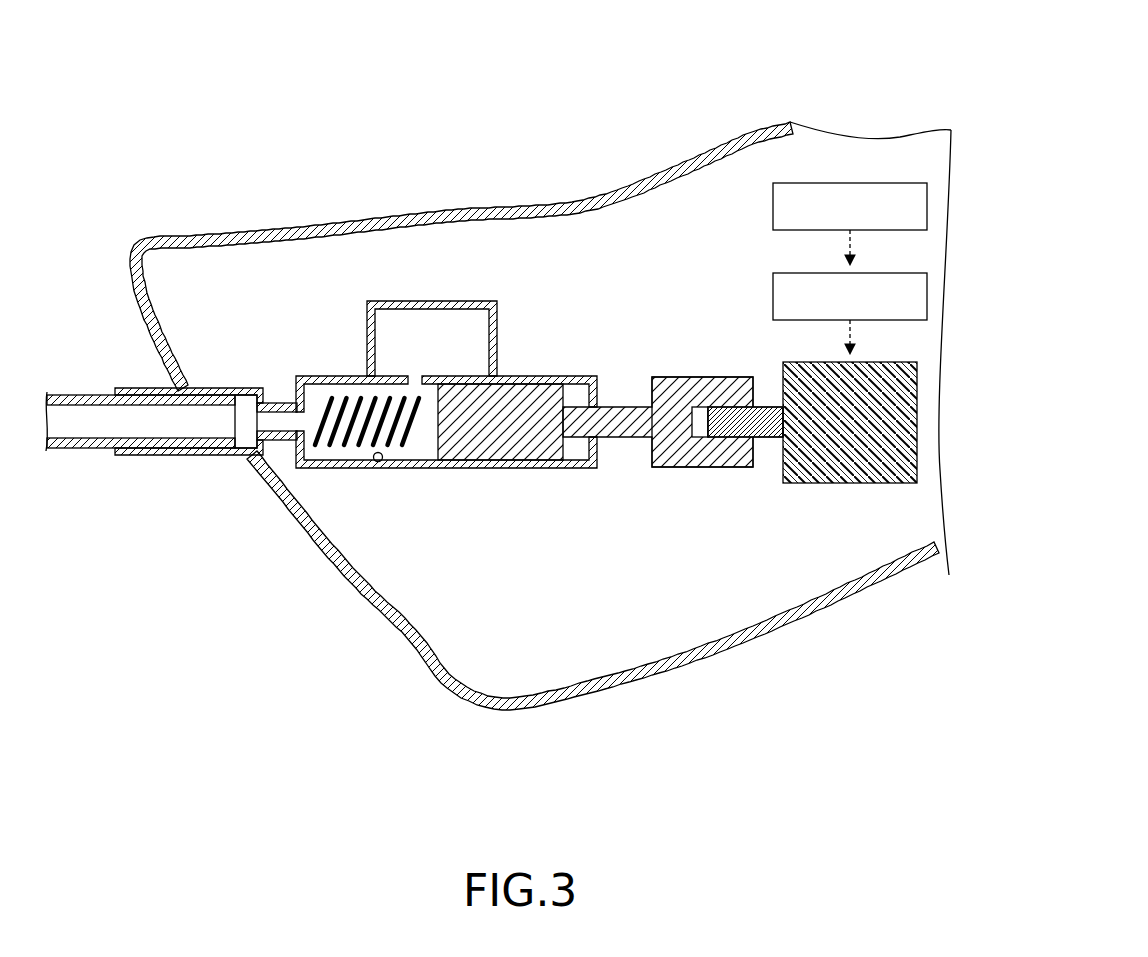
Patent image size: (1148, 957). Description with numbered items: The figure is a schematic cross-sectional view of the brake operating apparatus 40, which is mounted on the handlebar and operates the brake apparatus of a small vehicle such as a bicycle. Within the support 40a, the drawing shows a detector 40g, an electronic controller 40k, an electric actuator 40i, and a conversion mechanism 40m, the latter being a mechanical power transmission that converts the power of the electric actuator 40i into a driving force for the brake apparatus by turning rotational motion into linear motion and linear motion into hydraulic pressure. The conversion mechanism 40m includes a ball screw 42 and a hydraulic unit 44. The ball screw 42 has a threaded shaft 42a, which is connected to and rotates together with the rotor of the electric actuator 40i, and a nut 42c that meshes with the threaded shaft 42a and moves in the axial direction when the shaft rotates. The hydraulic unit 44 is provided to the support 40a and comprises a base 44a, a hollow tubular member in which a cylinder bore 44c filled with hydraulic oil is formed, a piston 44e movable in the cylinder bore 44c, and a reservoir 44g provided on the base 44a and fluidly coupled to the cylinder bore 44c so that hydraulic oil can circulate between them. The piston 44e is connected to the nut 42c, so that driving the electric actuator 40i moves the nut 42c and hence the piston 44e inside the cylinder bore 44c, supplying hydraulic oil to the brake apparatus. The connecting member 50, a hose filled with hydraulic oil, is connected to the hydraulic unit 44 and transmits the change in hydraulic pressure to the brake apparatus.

The brake operating apparatus 40 is at (702, 86).
The support 40a is at (570, 205).
The conversion mechanism 40m is at (637, 264).
The detector 40g is at (886, 183).
The electronic controller 40k is at (886, 273).
The electric actuator 40i is at (886, 362).
The ball screw 42 is at (709, 350).
The threaded shaft 42a is at (745, 440).
The nut 42c is at (672, 448).
The hydraulic unit 44 is at (535, 302).
The base 44a is at (557, 376).
The cylinder bore 44c is at (383, 466).
The piston 44e is at (502, 448).
The reservoir 44g is at (455, 300).
The connecting member 50 is at (85, 395).